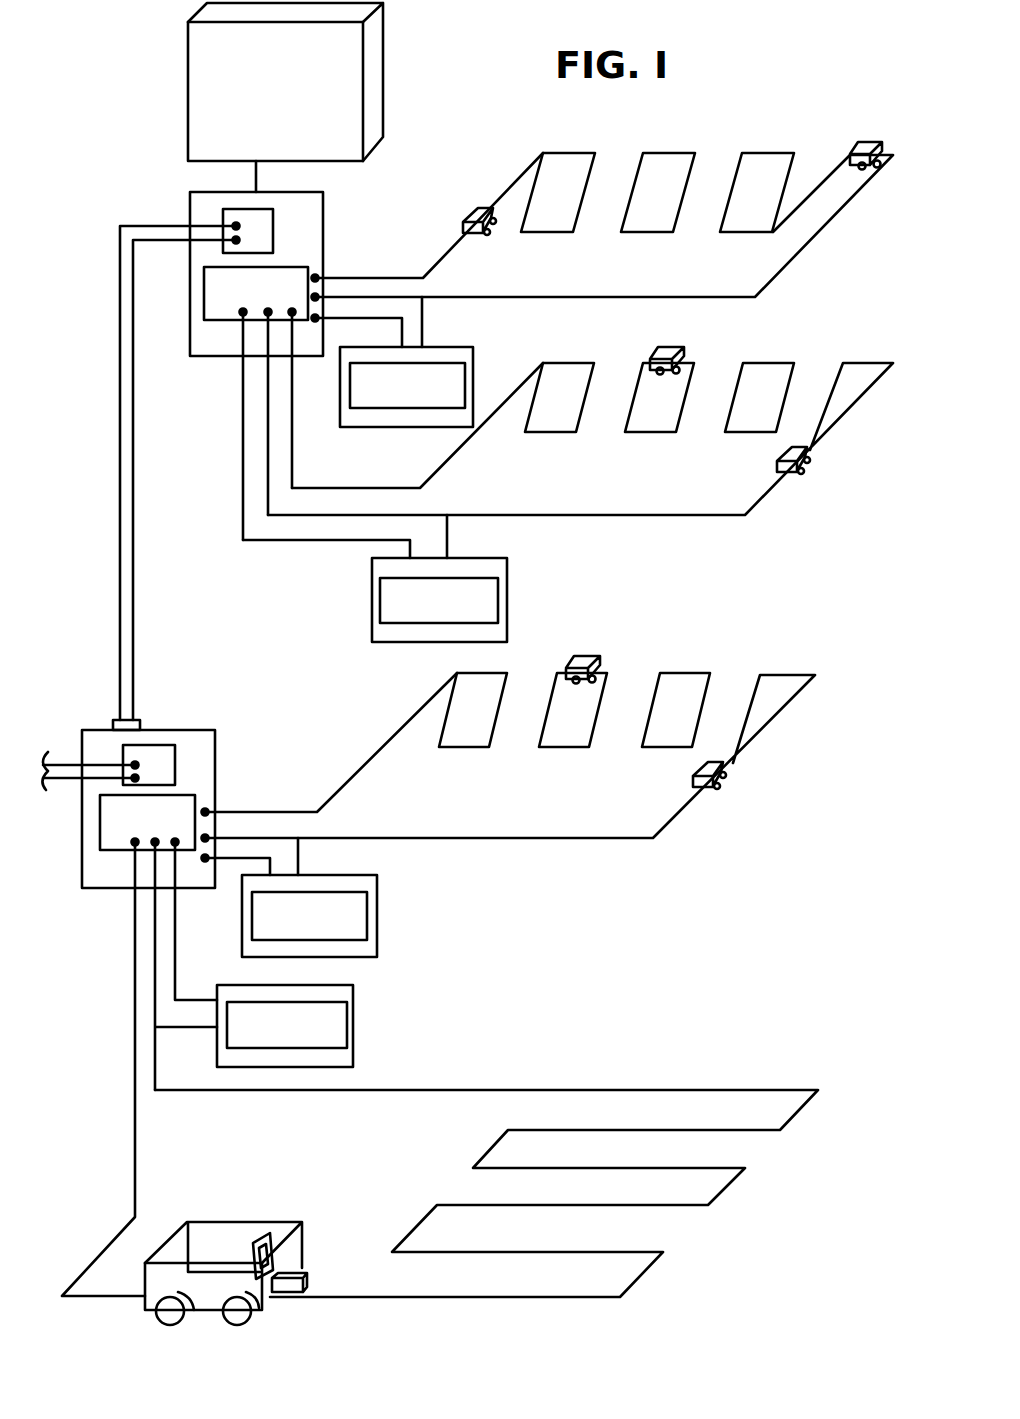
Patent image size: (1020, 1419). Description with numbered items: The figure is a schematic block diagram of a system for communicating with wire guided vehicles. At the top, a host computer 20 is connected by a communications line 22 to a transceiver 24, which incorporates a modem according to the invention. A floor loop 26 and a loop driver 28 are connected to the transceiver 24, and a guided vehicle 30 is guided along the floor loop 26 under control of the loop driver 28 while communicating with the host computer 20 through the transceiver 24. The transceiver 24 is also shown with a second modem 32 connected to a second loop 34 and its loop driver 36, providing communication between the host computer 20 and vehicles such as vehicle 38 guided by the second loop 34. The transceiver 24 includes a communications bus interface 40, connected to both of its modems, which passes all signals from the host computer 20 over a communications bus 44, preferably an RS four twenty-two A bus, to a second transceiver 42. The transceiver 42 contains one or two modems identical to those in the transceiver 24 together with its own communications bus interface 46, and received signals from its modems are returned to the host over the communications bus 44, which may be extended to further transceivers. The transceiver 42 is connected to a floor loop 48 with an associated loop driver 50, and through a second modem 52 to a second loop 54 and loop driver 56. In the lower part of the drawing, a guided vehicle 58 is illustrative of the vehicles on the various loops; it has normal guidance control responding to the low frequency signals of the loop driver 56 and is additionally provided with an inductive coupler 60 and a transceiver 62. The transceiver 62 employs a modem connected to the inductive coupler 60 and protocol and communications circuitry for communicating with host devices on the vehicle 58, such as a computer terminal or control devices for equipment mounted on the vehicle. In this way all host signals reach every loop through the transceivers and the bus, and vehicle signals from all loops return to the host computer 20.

The host computer 20 is at (374, 126).
The communications line 22 is at (258, 173).
The transceiver 24 is at (323, 240).
The communications bus interface 40 is at (273, 232).
The second modem 32 is at (240, 320).
The vehicle 30 is at (470, 220).
The floor loop 26 is at (768, 283).
The loop driver 28 is at (473, 360).
The second loop 34 is at (668, 517).
The vehicle 38 is at (806, 455).
The loop driver 36 is at (507, 628).
The communications bus 44 is at (134, 657).
The transceiver 42 is at (215, 770).
The communications bus interface 46 is at (175, 770).
The second modem 52 is at (131, 850).
The floor loop 48 is at (655, 845).
The loop driver 50 is at (377, 890).
The loop driver 56 is at (353, 995).
The second loop 54 is at (498, 1090).
The guided vehicle 58 is at (215, 1222).
The transceiver 62 is at (268, 1236).
The inductive coupler 60 is at (305, 1277).